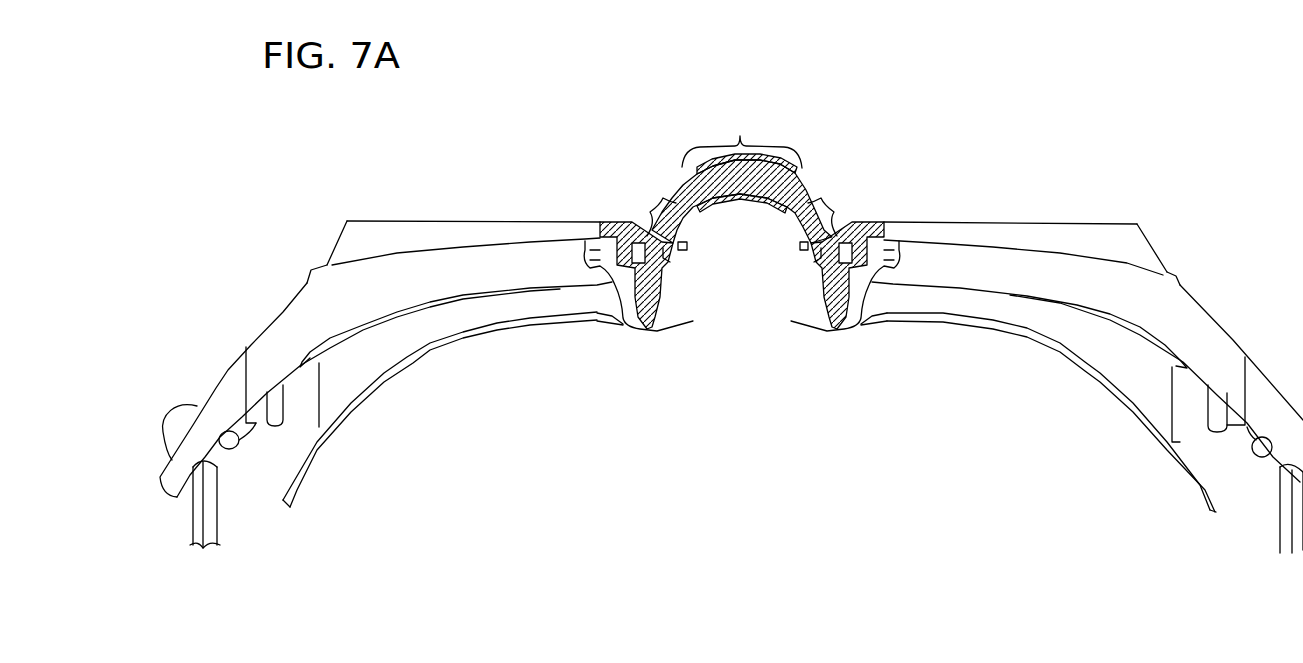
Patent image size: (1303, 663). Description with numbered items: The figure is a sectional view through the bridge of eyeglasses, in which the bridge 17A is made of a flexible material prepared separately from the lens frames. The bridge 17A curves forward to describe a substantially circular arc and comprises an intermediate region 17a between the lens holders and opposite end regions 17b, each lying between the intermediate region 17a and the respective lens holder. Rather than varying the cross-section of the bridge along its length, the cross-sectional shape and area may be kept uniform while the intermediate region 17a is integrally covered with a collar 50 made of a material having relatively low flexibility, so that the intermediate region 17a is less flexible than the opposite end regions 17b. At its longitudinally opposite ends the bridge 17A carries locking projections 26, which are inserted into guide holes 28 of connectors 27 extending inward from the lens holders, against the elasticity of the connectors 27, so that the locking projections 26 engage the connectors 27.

The bridge 17A is at (780, 188).
The intermediate region 17a is at (742, 135).
The opposite end regions 17b is at (741, 202).
The guide holes 28 is at (618, 227).
The connectors 27 is at (687, 246).
The locking projections 26 is at (667, 249).
The collar 50 is at (768, 208).